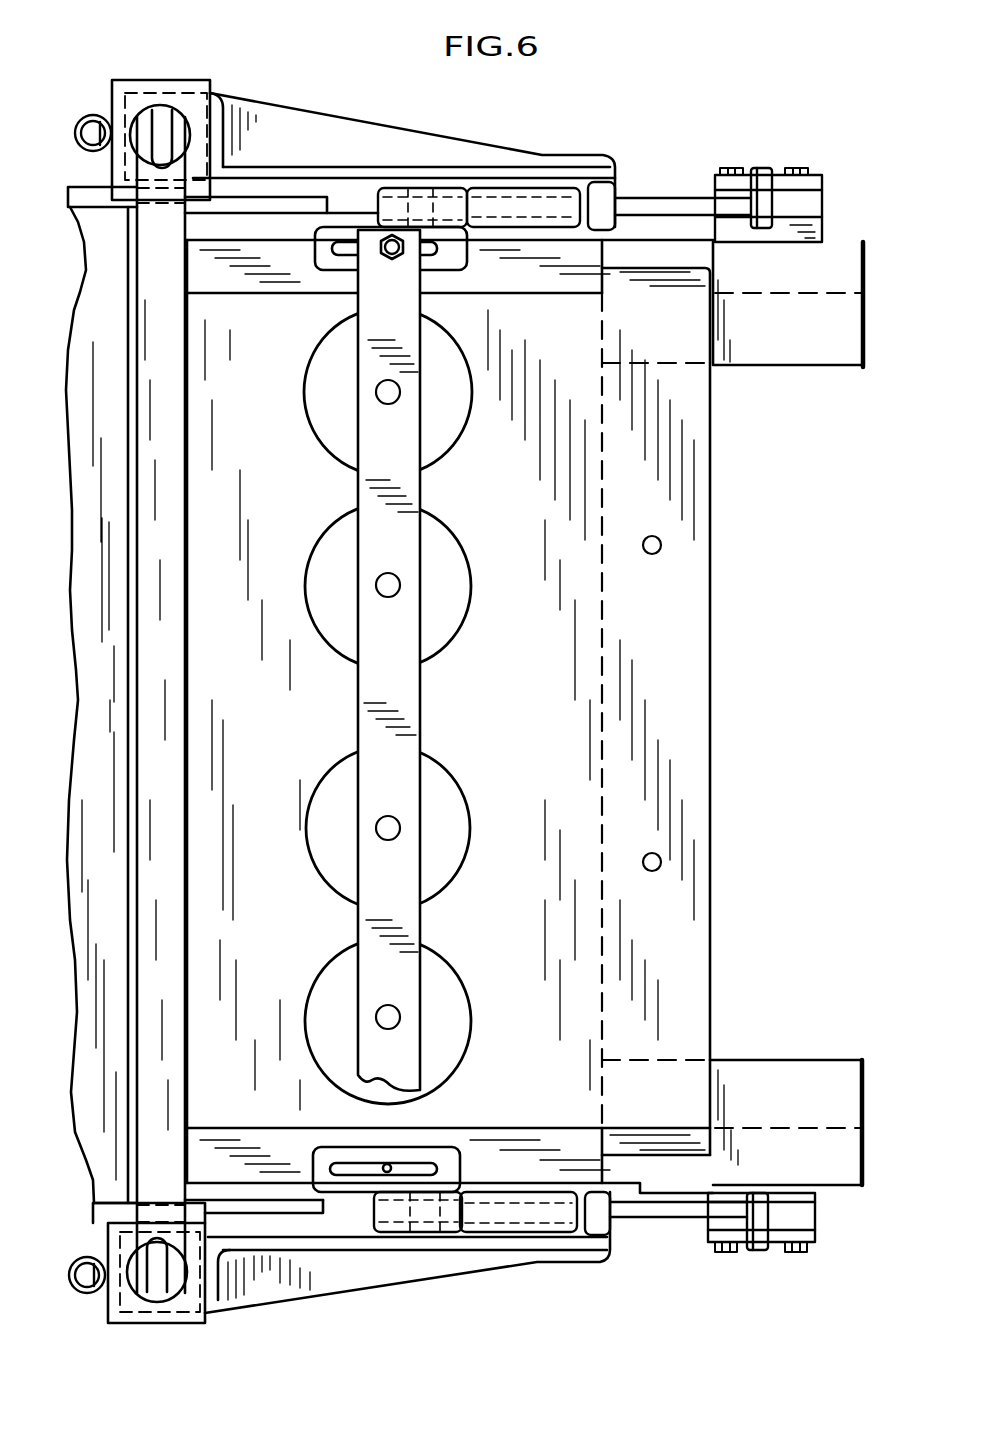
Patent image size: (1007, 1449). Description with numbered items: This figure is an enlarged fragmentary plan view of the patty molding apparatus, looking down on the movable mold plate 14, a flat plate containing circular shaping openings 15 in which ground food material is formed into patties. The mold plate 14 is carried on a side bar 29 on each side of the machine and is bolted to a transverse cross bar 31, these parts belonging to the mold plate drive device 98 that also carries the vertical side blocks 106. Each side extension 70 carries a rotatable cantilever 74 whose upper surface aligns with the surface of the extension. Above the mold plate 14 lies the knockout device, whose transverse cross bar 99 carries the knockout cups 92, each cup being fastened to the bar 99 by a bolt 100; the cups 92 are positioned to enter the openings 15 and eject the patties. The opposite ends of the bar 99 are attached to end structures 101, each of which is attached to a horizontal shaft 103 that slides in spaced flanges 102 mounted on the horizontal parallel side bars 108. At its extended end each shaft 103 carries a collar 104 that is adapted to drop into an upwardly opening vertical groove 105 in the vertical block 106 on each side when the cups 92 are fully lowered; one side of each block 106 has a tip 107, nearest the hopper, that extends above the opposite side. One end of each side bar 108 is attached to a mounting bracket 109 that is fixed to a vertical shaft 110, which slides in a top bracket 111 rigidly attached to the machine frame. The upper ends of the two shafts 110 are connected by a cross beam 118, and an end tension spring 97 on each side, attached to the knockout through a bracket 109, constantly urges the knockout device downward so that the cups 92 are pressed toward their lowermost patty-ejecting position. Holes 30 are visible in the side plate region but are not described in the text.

The mold plate 14 is at (528, 681).
The circular shaping opening 15 is at (468, 570).
The side bar 29 is at (563, 283).
The hole 30 is at (655, 554).
The transverse cross bar 31 is at (666, 655).
The side extension 70 is at (293, 240).
The rotatable cantilever 74 is at (300, 200).
The knockout cup 92 is at (448, 437).
The end tension spring 97 is at (94, 115).
The mold plate drive device 98 is at (870, 1048).
The cross bar 99 is at (368, 697).
The bolt 100 is at (385, 405).
The end structure 101 is at (462, 258).
The spaced flange 102 is at (422, 197).
The horizontal shaft 103 is at (540, 198).
The collar 104 is at (763, 168).
The groove 105 is at (767, 207).
The vertical block 106 is at (810, 200).
The tip 107 is at (728, 193).
The side bar 108 is at (372, 175).
The mounting bracket 109 is at (228, 112).
The vertical shaft 110 is at (160, 125).
The top bracket 111 is at (176, 80).
The cross beam 118 is at (186, 552).